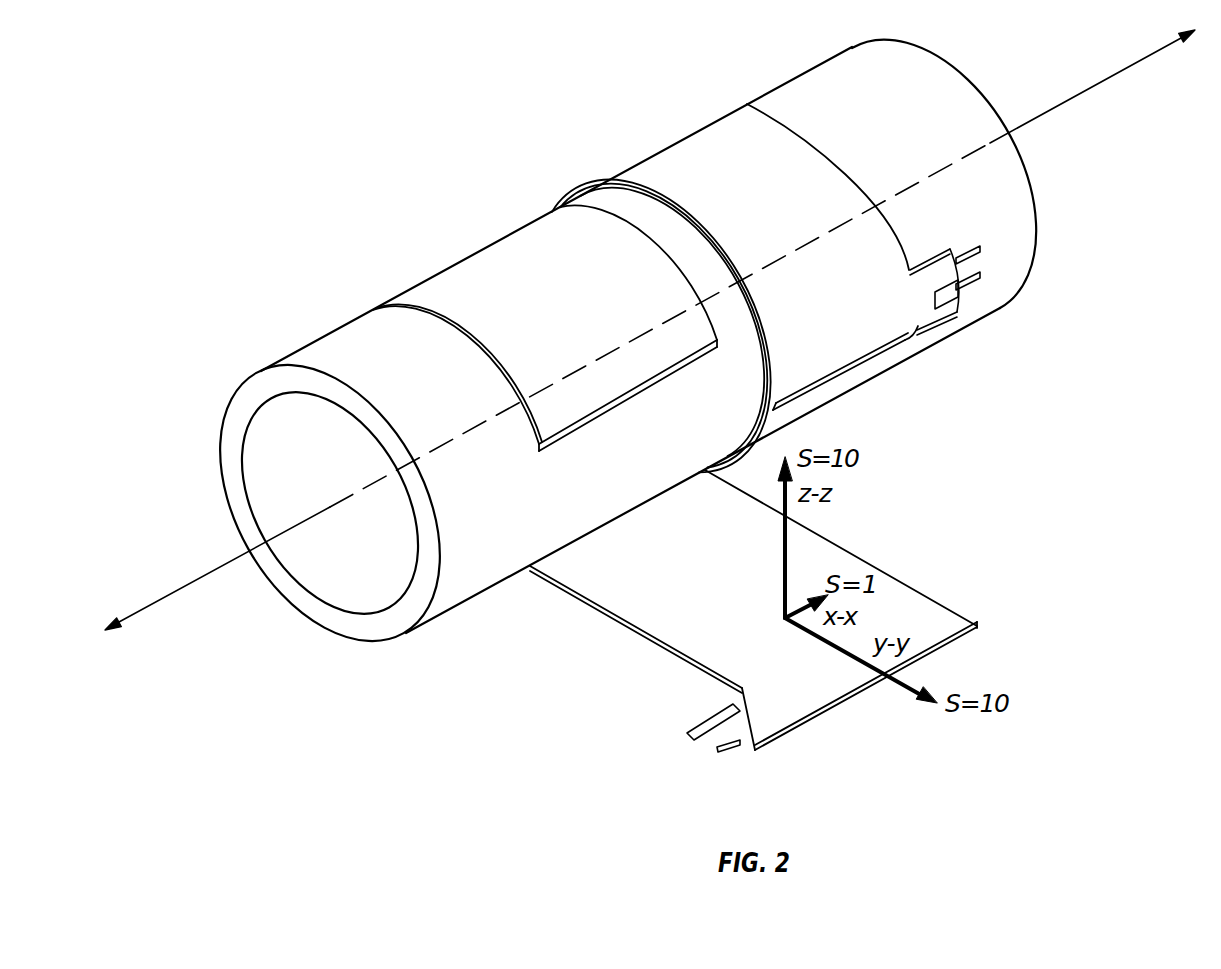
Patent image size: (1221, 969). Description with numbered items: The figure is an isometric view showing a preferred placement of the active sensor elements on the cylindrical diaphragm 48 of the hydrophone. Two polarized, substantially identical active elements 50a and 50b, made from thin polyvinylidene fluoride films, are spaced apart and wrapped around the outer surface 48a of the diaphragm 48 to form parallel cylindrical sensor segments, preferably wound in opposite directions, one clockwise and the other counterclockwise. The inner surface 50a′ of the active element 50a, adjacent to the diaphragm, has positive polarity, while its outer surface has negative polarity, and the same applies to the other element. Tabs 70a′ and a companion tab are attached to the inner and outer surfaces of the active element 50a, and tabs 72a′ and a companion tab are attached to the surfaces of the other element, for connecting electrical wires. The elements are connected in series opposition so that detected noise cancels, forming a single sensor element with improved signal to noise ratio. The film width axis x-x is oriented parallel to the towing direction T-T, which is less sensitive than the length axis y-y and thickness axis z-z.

The diaphragm 48 is at (507, 517).
The outer surface of the diaphragm 48a is at (513, 363).
The active element 50a is at (677, 524).
The inner surface of the active element 50a′ is at (700, 535).
The active element 50b is at (730, 298).
The tab 70a′ is at (661, 695).
The tab 72a′ is at (1085, 195).